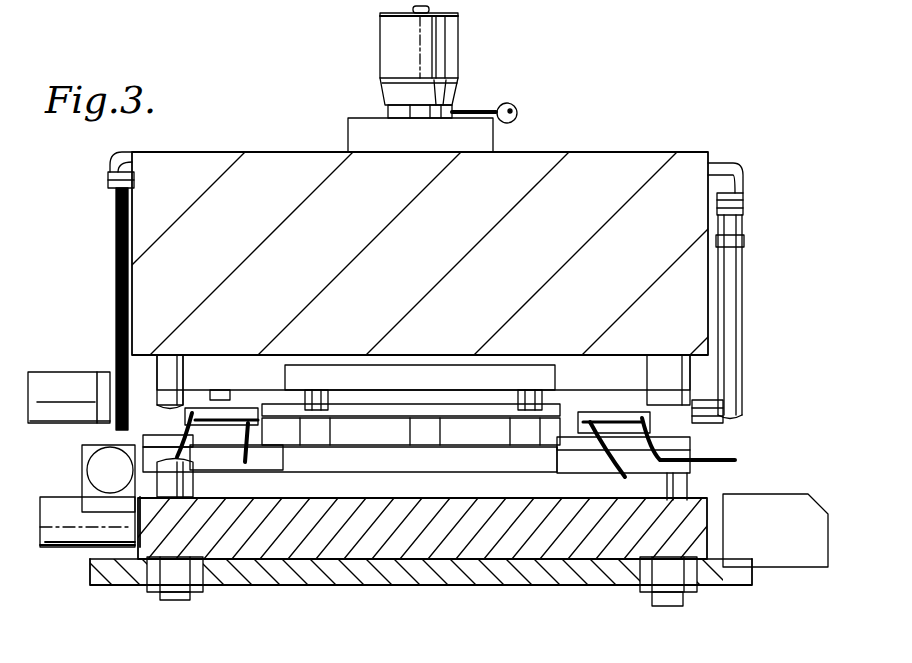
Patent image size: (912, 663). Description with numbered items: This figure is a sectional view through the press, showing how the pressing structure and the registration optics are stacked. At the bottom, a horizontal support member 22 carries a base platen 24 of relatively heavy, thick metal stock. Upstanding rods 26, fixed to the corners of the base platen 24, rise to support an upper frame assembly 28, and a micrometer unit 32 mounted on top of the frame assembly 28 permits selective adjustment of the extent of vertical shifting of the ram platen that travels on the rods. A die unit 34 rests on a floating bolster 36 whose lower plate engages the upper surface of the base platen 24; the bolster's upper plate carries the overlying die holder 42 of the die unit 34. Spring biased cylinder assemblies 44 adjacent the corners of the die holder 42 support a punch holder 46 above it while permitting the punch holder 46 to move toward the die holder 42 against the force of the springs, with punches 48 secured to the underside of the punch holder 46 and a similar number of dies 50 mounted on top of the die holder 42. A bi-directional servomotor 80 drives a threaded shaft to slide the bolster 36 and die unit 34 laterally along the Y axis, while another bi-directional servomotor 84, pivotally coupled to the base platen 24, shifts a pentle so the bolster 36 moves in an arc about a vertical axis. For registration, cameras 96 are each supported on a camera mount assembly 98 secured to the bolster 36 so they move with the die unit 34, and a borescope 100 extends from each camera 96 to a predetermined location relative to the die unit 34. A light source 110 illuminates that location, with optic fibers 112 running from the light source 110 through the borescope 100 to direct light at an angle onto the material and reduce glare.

The horizontal support member 22 is at (742, 586).
The base platen 24 is at (427, 550).
The upstanding rods 26 is at (168, 355).
The upper frame assembly 28 is at (600, 172).
The micrometer unit 32 is at (470, 66).
The die unit 34 is at (565, 355).
The floating bolster 36 is at (453, 495).
The die holder 42 is at (322, 458).
The spring biased cylinder assemblies 44 is at (315, 395).
The punch holder 46 is at (415, 378).
The punches 48 is at (423, 407).
The dies 50 is at (360, 432).
The bi-directional servomotor 80 is at (66, 546).
The bi-directional servomotor 84 is at (103, 478).
The cameras 96 is at (202, 410).
The camera mount assembly 98 is at (220, 430).
The borescope 100 is at (248, 405).
The light source 110 is at (755, 502).
The optic fibers 112 is at (257, 445).